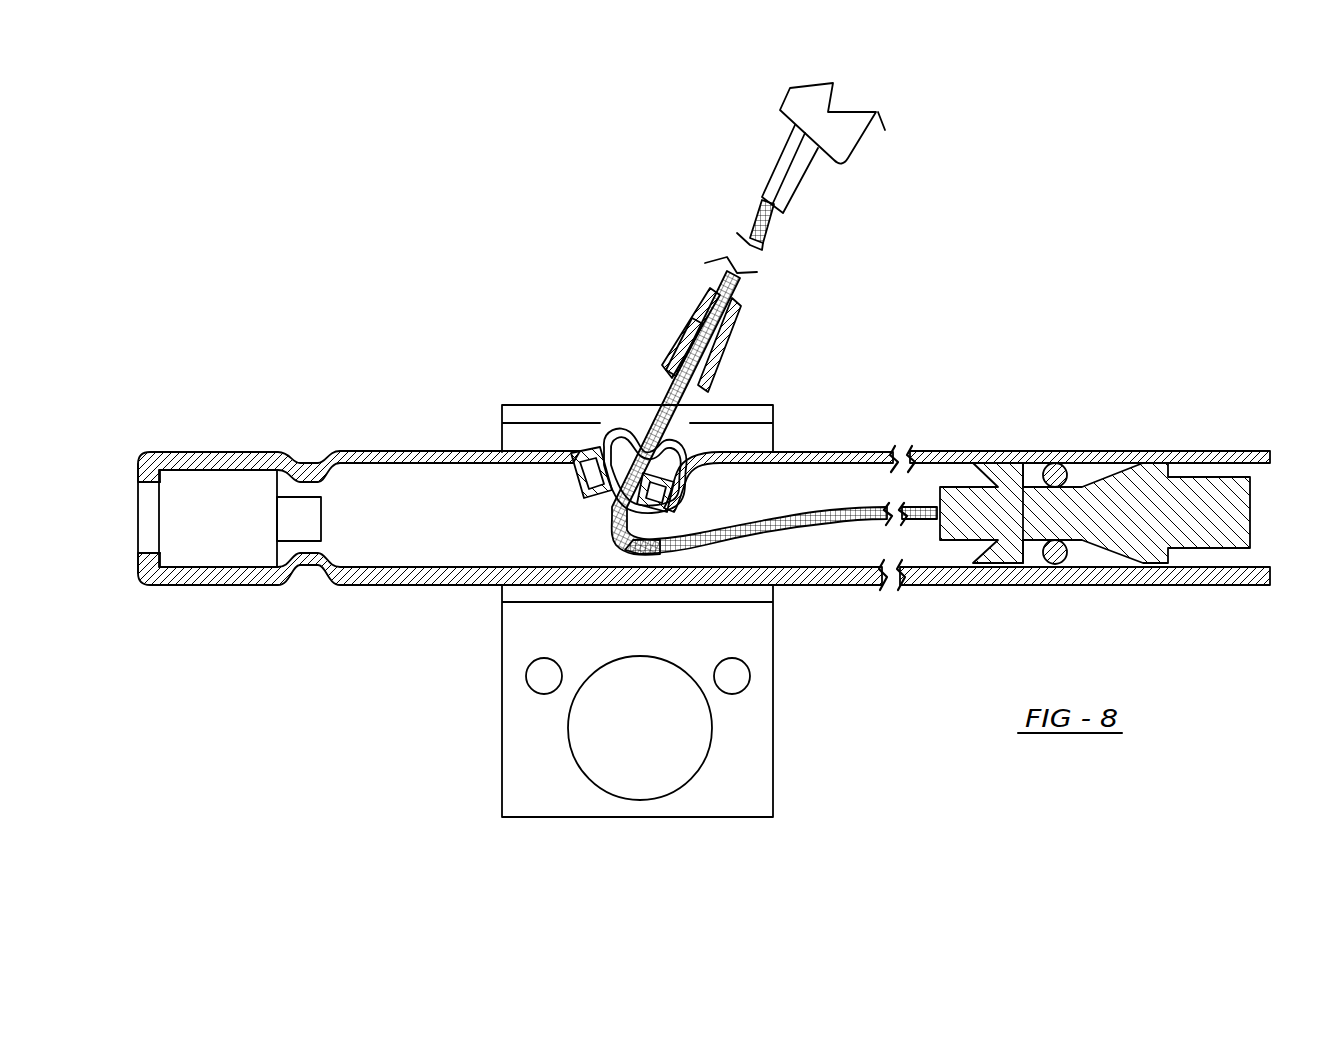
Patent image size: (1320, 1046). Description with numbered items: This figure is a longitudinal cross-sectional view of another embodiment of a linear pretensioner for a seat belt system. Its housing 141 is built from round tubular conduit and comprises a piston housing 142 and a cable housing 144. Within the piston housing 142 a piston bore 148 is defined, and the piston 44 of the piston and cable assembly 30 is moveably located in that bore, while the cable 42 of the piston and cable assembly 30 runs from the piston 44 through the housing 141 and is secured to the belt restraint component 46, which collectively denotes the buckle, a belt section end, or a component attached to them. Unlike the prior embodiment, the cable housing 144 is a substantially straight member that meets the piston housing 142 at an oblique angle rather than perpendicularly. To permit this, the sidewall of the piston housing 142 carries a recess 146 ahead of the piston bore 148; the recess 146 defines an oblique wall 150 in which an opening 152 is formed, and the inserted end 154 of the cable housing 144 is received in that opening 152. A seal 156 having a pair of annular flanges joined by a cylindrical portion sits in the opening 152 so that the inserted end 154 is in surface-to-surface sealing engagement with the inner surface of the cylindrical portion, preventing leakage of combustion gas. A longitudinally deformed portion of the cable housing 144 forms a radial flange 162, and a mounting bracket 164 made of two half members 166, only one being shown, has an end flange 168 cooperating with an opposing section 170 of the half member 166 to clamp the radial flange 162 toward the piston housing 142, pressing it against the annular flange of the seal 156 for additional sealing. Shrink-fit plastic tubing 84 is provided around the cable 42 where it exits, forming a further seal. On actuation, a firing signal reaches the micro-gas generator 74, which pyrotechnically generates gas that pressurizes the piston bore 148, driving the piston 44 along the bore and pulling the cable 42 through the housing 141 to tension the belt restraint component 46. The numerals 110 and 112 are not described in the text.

The piston and cable assembly 30 is at (686, 438).
The cable 42 is at (768, 230).
The piston 44 is at (1095, 462).
The belt restraint component 46 is at (793, 113).
The micro-gas generator 74 is at (213, 498).
The shrink-fit plastic tubing 84 is at (727, 340).
The groove 110 is at (300, 572).
The tube end 112 is at (142, 582).
The housing 141 is at (704, 488).
The piston housing 142 is at (418, 453).
The cable housing 144 is at (650, 407).
The recess 146 is at (833, 467).
The piston bore 148 is at (941, 463).
The oblique wall 150 is at (610, 430).
The opening 152 is at (612, 505).
The inserted end 154 is at (618, 492).
The seal 156 is at (680, 500).
The radial flange 162 is at (682, 468).
The mounting bracket 164 is at (619, 559).
The half member 166 is at (528, 771).
The end flange 168 is at (631, 429).
The opposing section 170 is at (623, 593).